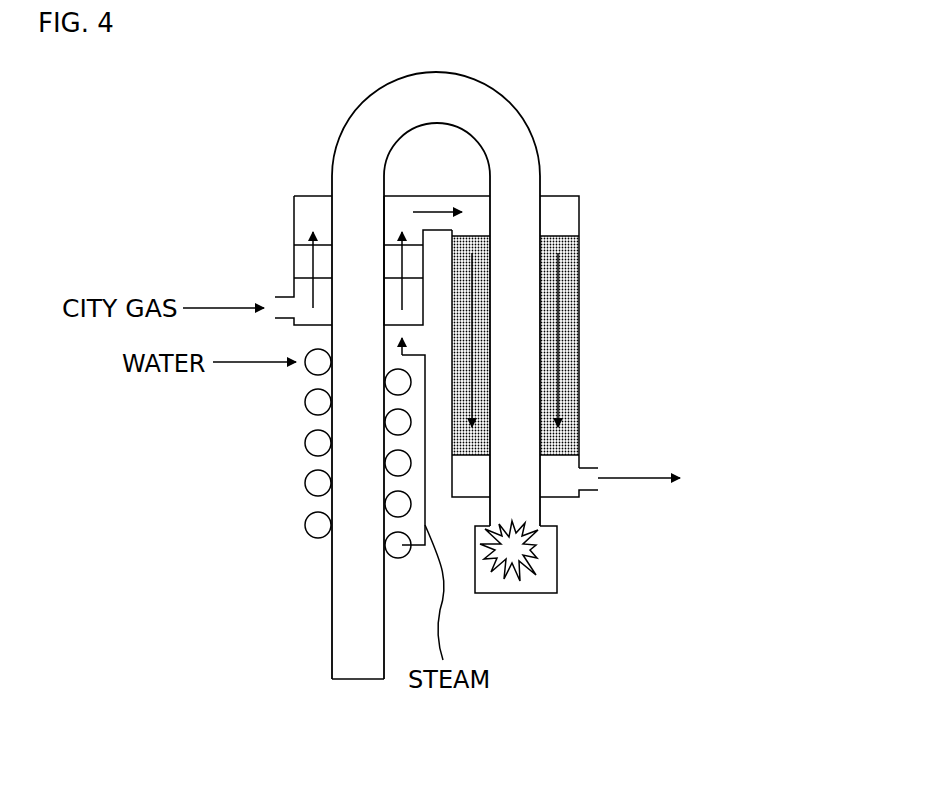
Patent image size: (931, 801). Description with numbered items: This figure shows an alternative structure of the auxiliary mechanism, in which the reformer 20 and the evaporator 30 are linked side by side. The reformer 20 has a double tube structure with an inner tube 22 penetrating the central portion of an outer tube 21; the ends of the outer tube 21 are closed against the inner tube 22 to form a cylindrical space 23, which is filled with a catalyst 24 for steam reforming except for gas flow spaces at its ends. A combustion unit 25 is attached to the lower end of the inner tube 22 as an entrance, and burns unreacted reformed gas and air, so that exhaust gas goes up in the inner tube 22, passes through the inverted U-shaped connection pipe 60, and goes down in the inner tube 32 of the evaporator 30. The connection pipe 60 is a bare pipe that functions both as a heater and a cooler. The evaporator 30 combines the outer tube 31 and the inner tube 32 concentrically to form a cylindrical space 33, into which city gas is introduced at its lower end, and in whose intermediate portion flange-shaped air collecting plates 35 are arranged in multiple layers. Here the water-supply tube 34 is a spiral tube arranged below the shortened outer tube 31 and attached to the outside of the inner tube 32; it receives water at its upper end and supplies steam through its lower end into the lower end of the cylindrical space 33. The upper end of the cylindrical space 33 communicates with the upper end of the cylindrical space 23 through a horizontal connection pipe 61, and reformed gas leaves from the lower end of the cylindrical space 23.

The reformer 20 is at (600, 400).
The outer tube 21 is at (580, 283).
The inner tube 22 is at (579, 221).
The cylindrical space 23 is at (563, 497).
The catalyst 24 is at (580, 338).
The combustion unit 25 is at (538, 593).
The evaporator 30 is at (290, 508).
The outer tube 31 is at (294, 213).
The inner tube 32 is at (309, 196).
The cylindrical space 33 is at (302, 260).
The water-supply tube 34 is at (304, 445).
The air collecting plates 35 is at (294, 238).
The connection pipe 60 is at (435, 72).
The horizontal connection pipe 61 is at (428, 196).